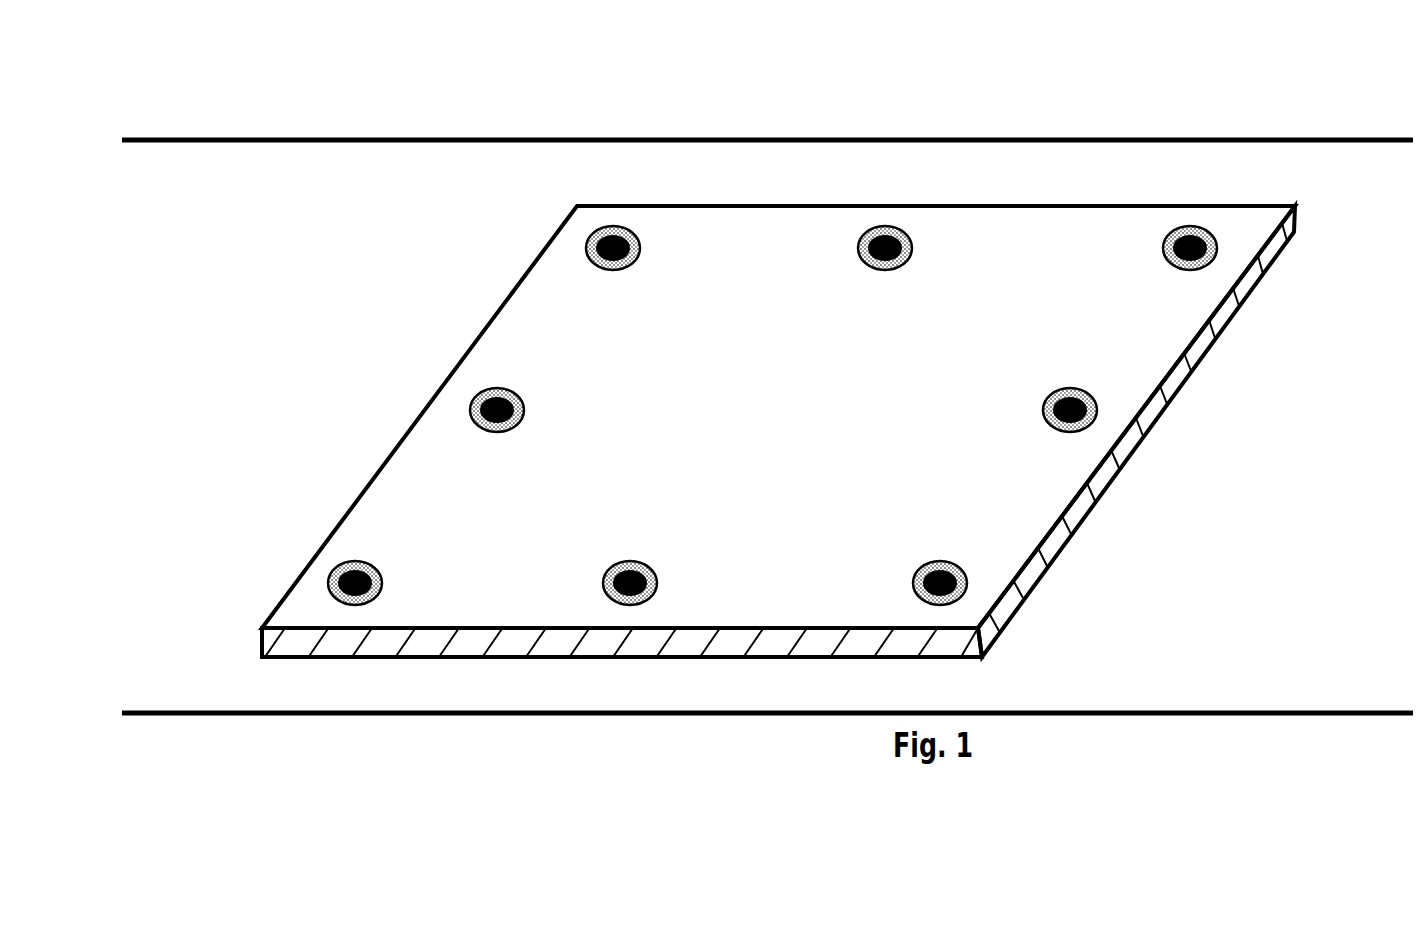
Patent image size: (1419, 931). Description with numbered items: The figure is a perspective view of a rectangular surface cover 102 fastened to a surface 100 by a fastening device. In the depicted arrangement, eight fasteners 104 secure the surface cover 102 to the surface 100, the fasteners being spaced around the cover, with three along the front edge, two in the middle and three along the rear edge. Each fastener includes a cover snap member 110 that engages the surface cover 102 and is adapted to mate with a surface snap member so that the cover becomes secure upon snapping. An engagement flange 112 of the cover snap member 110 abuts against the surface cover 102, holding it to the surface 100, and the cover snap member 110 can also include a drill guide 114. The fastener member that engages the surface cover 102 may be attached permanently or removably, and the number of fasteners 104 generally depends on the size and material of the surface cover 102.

The surface 100 is at (1205, 682).
The surface cover 102 is at (777, 204).
The fasteners 104 is at (1058, 175).
The cover snap member 110 is at (917, 255).
The engagement flange 112 is at (903, 233).
The drill guide 114 is at (877, 230).